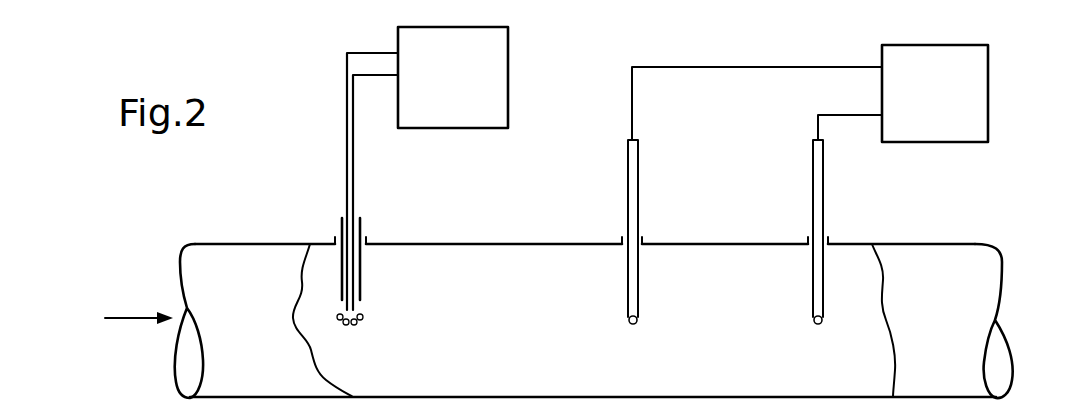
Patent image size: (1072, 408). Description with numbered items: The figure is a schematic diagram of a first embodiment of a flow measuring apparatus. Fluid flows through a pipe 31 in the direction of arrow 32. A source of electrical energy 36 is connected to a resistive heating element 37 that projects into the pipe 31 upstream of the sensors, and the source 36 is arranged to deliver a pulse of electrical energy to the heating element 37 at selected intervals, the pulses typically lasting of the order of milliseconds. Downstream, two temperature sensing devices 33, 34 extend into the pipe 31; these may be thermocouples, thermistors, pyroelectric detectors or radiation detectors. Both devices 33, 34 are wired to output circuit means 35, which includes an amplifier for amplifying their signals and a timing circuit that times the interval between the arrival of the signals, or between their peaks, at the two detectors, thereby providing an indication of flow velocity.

The pipe 31 is at (238, 246).
The arrow 32 is at (122, 315).
The temperature sensing device 33 is at (637, 315).
The temperature sensing device 34 is at (822, 313).
The output circuit means 35 is at (990, 92).
The source of electrical energy 36 is at (509, 62).
The resistive heating element 37 is at (362, 316).